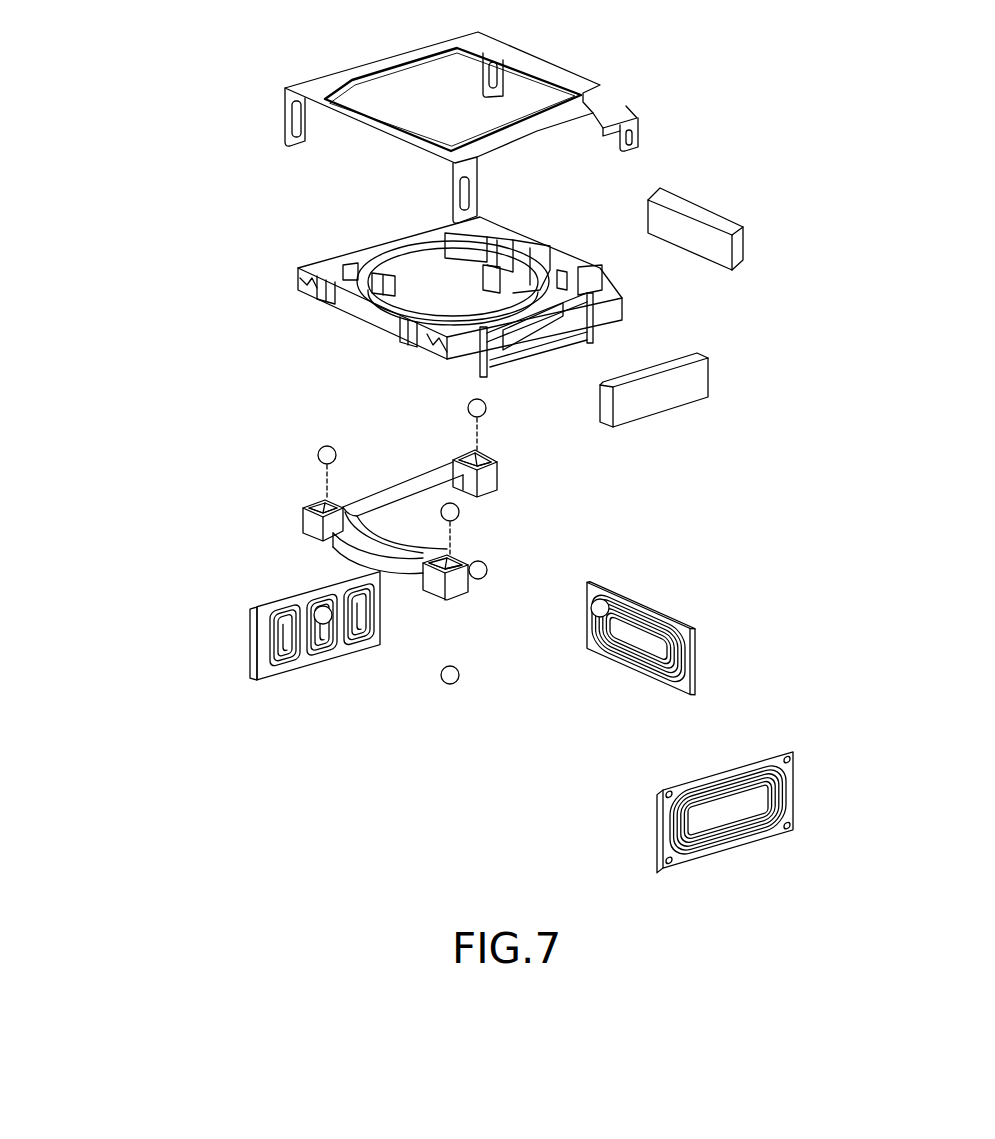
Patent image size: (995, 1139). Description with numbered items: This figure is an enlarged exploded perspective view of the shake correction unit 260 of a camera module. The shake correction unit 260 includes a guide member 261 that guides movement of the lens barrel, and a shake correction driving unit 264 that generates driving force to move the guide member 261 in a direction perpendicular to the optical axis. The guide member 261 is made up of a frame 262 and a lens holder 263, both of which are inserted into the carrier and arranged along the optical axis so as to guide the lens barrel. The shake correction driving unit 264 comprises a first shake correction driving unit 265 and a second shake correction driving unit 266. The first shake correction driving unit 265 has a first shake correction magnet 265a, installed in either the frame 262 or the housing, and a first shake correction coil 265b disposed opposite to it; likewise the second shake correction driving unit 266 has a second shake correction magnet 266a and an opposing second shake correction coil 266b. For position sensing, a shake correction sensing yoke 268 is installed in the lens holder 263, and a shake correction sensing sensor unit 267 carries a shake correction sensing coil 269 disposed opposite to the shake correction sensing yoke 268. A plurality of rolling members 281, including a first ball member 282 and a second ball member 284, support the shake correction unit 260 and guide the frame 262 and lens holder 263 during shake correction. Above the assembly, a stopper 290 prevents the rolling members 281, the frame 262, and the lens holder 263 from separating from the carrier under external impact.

The shake correction unit 260 is at (228, 216).
The guide member 261 is at (208, 346).
The frame 262 is at (317, 498).
The lens holder 263 is at (328, 310).
The shake correction driving unit 264 is at (885, 412).
The first shake correction driving unit 265 is at (827, 537).
The first shake correction magnet 265a is at (648, 622).
The first shake correction coil 265b is at (737, 793).
The second shake correction driving unit 266 is at (827, 338).
The second shake correction magnet 266a is at (738, 257).
The second shake correction coil 266b is at (673, 395).
The shake correction sensing sensor unit 267 is at (115, 258).
The shake correction sensing yoke 268 is at (392, 262).
The shake correction sensing coil 269 is at (265, 630).
The rolling members 281 is at (562, 612).
The first ball member 282 is at (450, 667).
The second ball member 284 is at (459, 508).
The stopper 290 is at (553, 72).